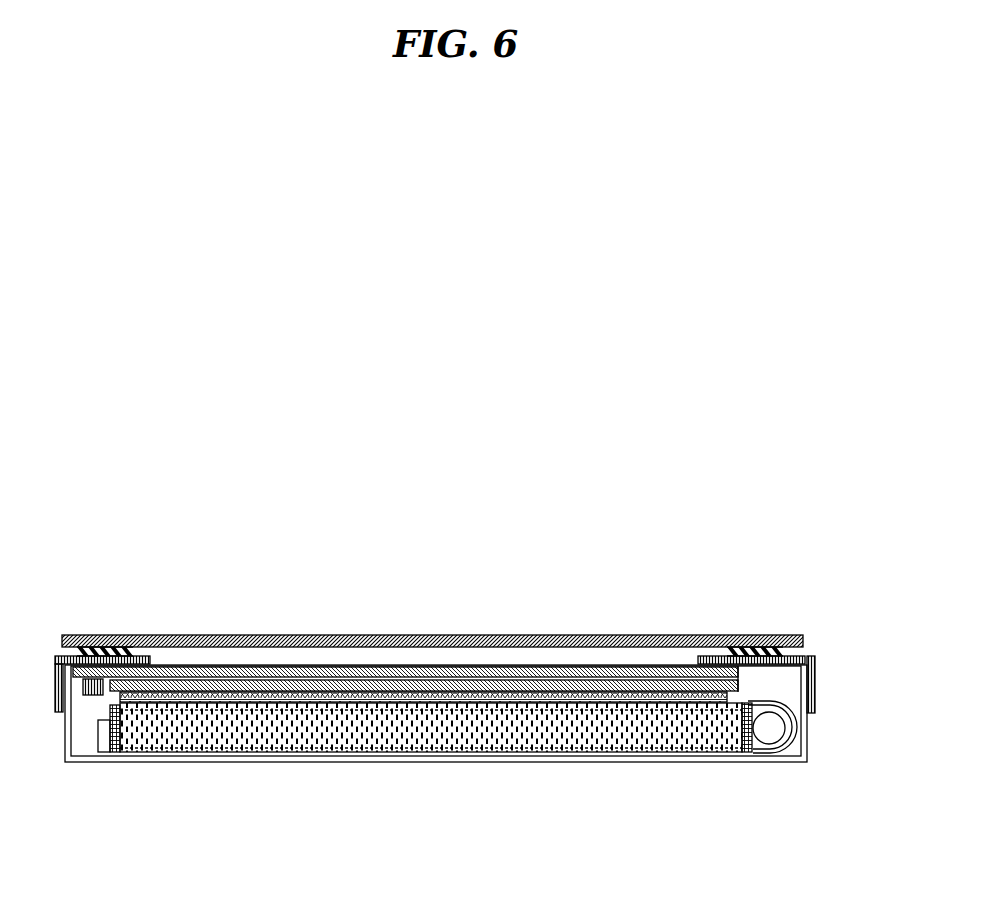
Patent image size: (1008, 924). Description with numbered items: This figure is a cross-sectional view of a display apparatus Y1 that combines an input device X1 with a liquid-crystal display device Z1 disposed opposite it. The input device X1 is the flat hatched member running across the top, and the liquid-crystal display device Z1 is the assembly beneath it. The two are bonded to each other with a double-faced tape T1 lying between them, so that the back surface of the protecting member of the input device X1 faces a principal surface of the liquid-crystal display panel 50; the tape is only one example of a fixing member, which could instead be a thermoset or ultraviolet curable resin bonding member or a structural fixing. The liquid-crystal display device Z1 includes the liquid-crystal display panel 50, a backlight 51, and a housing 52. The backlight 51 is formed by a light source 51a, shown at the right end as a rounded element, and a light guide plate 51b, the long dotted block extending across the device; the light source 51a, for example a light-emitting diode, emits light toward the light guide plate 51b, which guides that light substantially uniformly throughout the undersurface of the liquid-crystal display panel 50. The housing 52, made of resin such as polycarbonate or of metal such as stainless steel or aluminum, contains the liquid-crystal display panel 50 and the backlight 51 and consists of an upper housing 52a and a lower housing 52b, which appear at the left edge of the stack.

The liquid-crystal display panel 50 is at (738, 673).
The backlight 51 is at (458, 805).
The light source 51a is at (768, 730).
The light guide plate 51b is at (688, 742).
The housing 52 is at (114, 786).
The upper housing 52a is at (55, 692).
The lower housing 52b is at (142, 776).
The double-faced tape T1 is at (803, 641).
The input device X1 is at (402, 632).
The display apparatus Y1 is at (667, 568).
The liquid-crystal display device Z1 is at (332, 767).